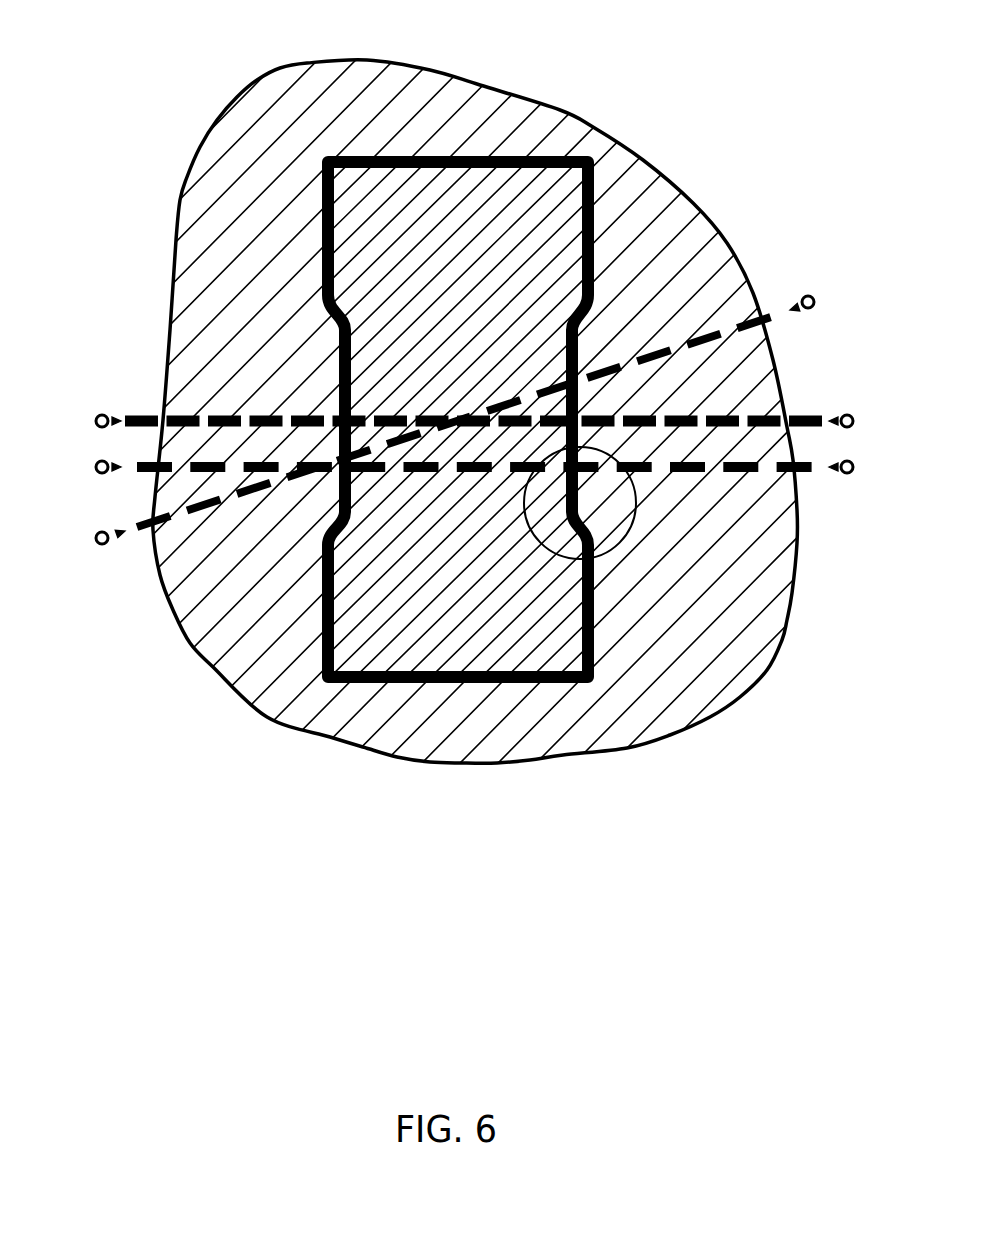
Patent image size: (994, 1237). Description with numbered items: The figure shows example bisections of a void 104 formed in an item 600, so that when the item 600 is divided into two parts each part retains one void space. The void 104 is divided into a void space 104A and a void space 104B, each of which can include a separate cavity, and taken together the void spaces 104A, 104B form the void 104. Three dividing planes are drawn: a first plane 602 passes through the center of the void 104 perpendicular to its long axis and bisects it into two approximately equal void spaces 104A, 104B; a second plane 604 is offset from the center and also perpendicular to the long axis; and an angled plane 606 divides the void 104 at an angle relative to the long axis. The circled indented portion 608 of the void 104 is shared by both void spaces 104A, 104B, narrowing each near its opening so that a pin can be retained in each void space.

The item 600 is at (205, 112).
The void 104 is at (497, 393).
The void space 104A is at (443, 240).
The void space 104B is at (459, 567).
The first plane 602 is at (475, 422).
The second plane 604 is at (475, 467).
The angled plane 606 is at (461, 425).
The indented portion 608 is at (637, 522).